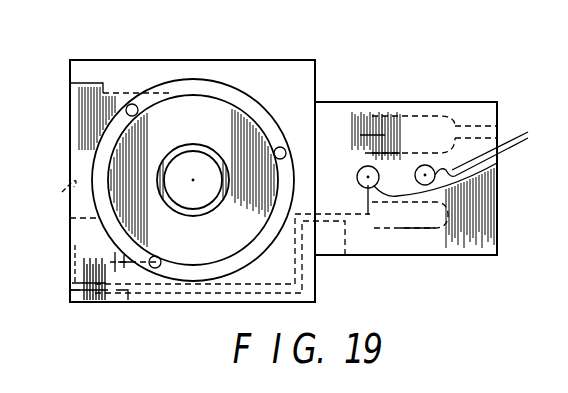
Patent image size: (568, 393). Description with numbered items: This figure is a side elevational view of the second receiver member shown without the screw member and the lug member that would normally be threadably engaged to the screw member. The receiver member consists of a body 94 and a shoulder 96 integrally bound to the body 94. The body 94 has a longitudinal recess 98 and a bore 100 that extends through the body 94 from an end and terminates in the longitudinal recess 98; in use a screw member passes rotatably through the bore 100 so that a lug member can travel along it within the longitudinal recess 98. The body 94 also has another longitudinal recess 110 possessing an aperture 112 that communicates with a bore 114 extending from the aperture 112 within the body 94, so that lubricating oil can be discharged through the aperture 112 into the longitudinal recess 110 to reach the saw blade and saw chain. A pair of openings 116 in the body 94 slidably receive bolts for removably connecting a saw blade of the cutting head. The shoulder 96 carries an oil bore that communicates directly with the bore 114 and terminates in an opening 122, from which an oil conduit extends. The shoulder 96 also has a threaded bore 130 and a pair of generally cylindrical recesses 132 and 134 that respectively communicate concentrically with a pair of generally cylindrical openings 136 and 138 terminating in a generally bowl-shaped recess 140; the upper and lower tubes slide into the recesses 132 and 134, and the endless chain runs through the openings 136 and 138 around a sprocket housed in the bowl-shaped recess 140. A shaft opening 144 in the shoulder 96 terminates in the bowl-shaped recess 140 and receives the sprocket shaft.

The body 94 is at (468, 244).
The shoulder 96 is at (243, 72).
The longitudinal recess 98 is at (388, 115).
The bore 100 is at (502, 124).
The longitudinal recess 110 is at (430, 230).
The aperture 112 is at (388, 232).
The bore 114 is at (340, 256).
The openings 116 is at (458, 158).
The opening 122 is at (75, 290).
The threaded bore 130 is at (70, 218).
The cylindrical recess 132 is at (70, 262).
The cylindrical recess 134 is at (75, 125).
The cylindrical opening 136 is at (113, 305).
The cylindrical opening 138 is at (133, 80).
The bowl-shaped recess 140 is at (162, 130).
The shaft opening 144 is at (192, 167).